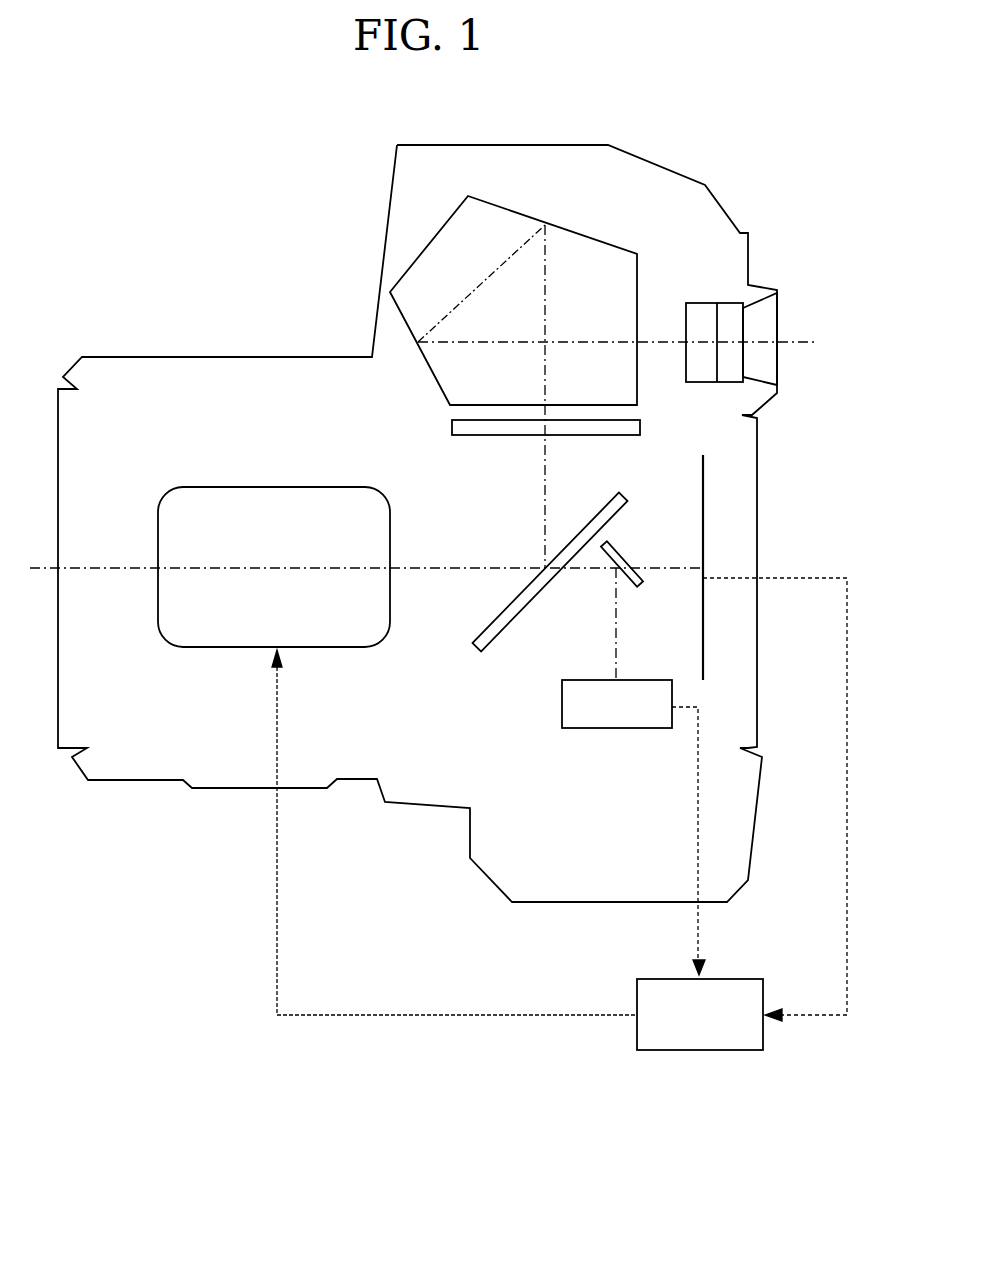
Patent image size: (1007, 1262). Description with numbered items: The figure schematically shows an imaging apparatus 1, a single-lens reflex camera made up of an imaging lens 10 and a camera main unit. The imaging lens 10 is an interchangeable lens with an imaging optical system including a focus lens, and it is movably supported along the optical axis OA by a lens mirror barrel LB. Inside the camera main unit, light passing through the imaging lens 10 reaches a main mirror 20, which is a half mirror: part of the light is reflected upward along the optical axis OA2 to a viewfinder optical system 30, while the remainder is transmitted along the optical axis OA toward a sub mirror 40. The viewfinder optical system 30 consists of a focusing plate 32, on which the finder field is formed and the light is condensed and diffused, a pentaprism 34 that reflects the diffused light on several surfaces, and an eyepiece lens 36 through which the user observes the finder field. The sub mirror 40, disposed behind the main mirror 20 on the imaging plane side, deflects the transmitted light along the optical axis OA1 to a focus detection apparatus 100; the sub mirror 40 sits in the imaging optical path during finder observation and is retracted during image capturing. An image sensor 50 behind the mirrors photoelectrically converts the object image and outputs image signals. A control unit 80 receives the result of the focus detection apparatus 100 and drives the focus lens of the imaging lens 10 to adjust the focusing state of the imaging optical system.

The imaging apparatus 1 is at (272, 210).
The imaging lens 10 is at (228, 650).
The main mirror 20 is at (505, 610).
The viewfinder optical system 30 is at (768, 126).
The focusing plate 32 is at (578, 437).
The pentaprism 34 is at (702, 302).
The eyepiece lens 36 is at (730, 302).
The sub mirror 40 is at (620, 552).
The image sensor 50 is at (702, 467).
The control unit 80 is at (700, 1052).
The focus detection apparatus 100 is at (562, 703).
The lens mirror barrel LB is at (212, 365).
The optical axis OA is at (103, 570).
The optical axis (focus detection) OA1 is at (615, 655).
The optical axis (viewfinder) OA2 is at (542, 482).